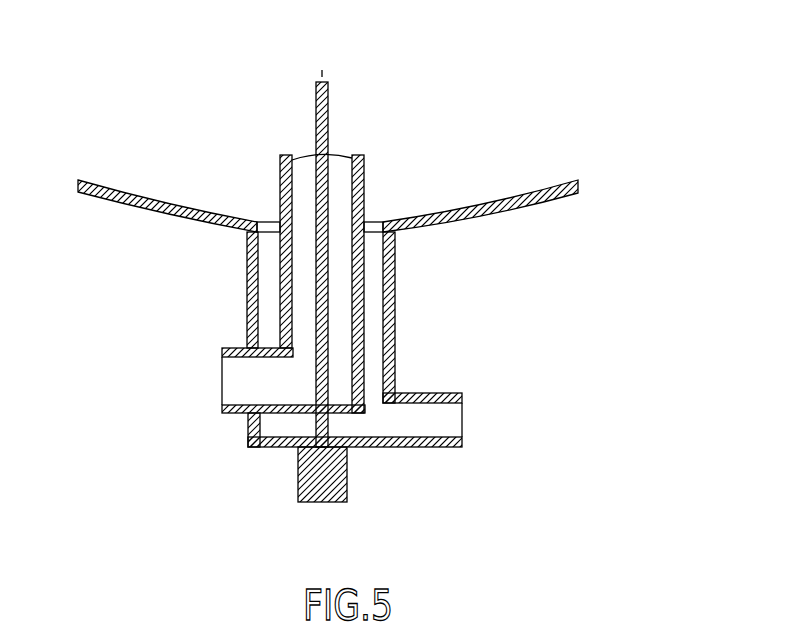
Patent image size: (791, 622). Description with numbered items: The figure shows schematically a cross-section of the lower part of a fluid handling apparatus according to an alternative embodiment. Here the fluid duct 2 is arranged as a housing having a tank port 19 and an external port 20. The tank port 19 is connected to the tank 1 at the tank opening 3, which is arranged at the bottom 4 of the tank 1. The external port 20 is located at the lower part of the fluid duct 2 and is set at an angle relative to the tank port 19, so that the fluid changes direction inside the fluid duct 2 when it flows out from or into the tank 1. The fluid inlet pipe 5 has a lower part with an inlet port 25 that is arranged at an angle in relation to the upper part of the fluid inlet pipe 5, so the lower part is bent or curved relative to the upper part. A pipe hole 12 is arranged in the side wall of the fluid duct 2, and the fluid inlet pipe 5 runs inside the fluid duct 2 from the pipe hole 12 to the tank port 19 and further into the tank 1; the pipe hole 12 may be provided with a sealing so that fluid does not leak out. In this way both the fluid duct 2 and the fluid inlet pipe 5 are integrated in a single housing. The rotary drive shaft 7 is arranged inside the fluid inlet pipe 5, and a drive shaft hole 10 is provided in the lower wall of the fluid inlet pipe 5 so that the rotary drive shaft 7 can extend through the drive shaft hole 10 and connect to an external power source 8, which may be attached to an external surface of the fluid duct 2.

The tank 1 is at (552, 198).
The fluid duct 2 is at (375, 262).
The tank opening 3 is at (272, 222).
The bottom 4 is at (177, 197).
The fluid inlet pipe 5 is at (343, 165).
The rotary drive shaft 7 is at (325, 93).
The external power source 8 is at (347, 475).
The drive shaft hole 10 is at (318, 413).
The pipe hole 12 is at (237, 415).
The tank port 19 is at (393, 237).
The external port 20 is at (452, 418).
The inlet port 25 is at (225, 380).